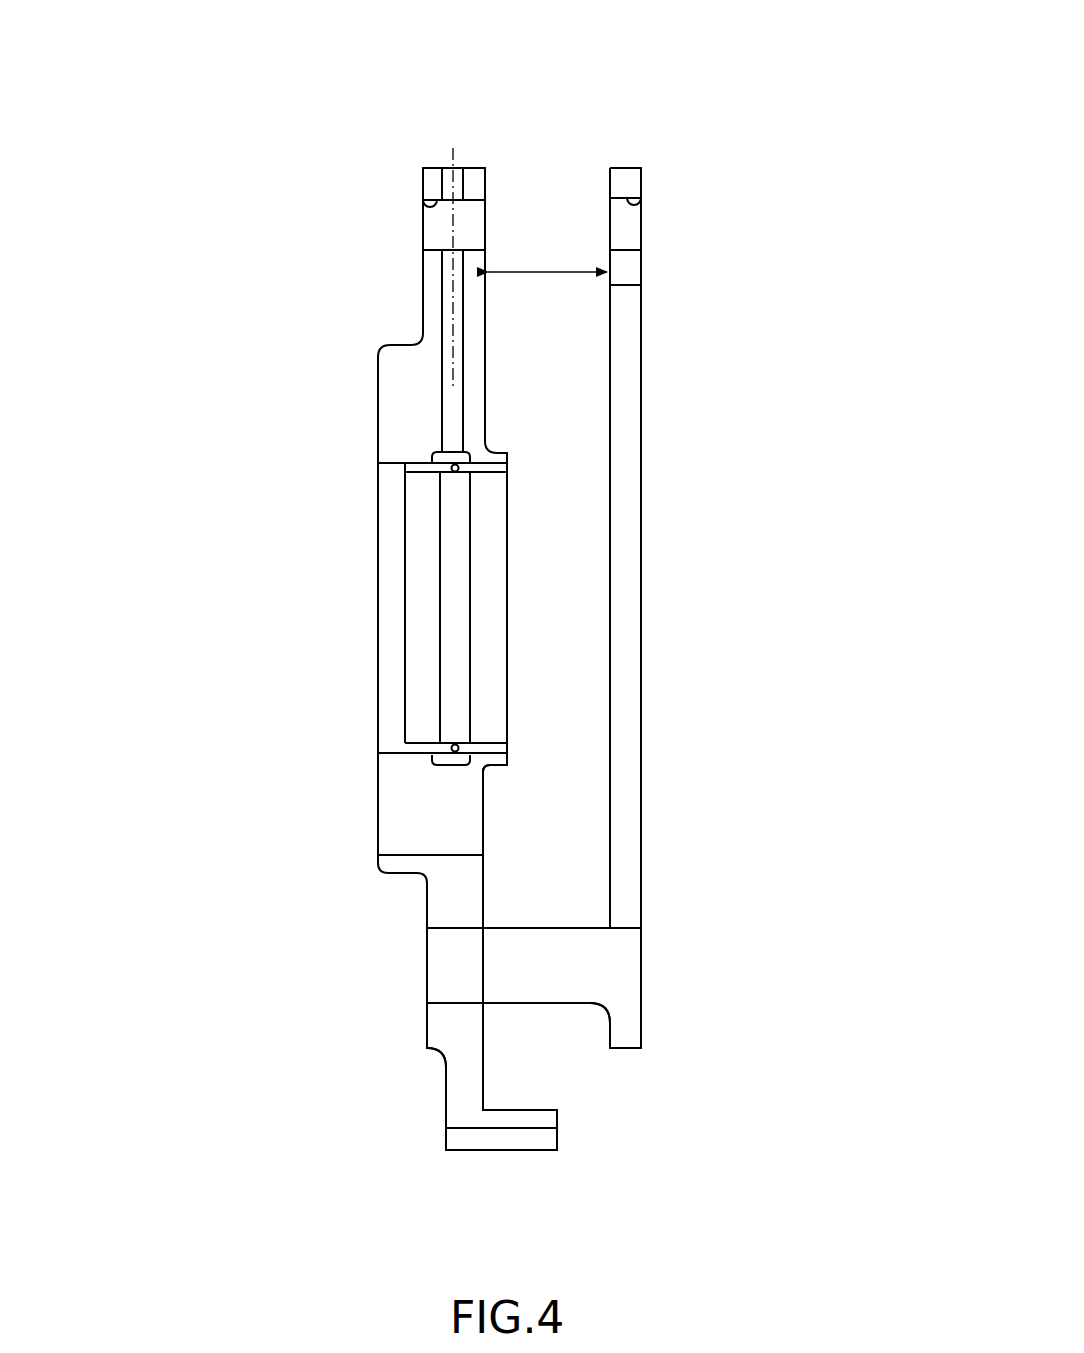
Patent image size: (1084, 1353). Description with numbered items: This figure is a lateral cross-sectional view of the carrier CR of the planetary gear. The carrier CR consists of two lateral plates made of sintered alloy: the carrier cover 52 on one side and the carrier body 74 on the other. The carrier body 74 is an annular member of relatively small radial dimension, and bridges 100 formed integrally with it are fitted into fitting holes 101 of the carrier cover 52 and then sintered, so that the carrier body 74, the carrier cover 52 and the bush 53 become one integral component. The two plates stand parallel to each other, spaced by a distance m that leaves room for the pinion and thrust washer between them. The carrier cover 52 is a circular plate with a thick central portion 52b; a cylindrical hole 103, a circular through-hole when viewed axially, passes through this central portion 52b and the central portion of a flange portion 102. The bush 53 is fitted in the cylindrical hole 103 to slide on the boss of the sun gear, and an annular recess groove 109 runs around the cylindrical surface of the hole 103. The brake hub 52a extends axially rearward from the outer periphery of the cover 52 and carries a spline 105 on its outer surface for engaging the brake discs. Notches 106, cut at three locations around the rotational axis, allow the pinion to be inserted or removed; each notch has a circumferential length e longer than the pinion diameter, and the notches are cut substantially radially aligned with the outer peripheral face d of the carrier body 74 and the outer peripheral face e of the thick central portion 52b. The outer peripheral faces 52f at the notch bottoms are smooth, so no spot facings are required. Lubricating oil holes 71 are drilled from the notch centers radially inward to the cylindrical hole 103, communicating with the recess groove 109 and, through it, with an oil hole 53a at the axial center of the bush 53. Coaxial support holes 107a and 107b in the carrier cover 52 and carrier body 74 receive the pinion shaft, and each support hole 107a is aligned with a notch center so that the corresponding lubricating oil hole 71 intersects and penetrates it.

The carrier cover 52 is at (403, 303).
The outer peripheral face 52f is at (435, 168).
The support hole 107a is at (426, 206).
The support hole 107b is at (634, 200).
The thick central portion 52b is at (378, 377).
The lubricating oil hole 71 is at (458, 348).
The bush 53 is at (418, 474).
The oil hole 53a is at (456, 472).
The cylindrical hole 103 is at (395, 745).
The annular recess groove 109 is at (473, 743).
The flange portion 102 is at (495, 767).
The fitting hole 101 is at (450, 930).
The carrier body 74 is at (664, 134).
The notch 106 is at (565, 173).
The distance m is at (547, 255).
The bridge 100 is at (543, 983).
The outer peripheral face d is at (627, 1052).
The outer peripheral face e is at (435, 1050).
The brake hub 52a is at (535, 1120).
The spline 105 is at (467, 1150).
The carrier CR is at (425, 105).